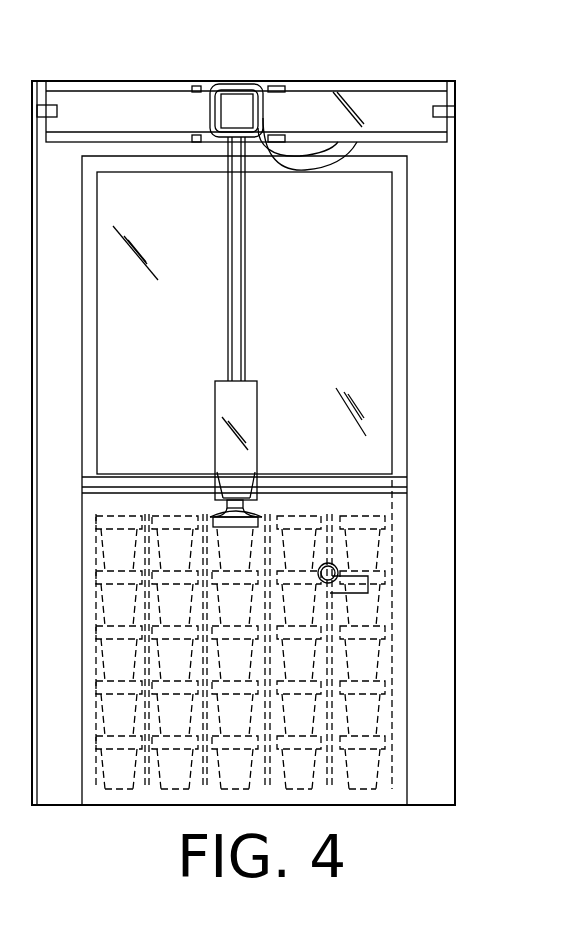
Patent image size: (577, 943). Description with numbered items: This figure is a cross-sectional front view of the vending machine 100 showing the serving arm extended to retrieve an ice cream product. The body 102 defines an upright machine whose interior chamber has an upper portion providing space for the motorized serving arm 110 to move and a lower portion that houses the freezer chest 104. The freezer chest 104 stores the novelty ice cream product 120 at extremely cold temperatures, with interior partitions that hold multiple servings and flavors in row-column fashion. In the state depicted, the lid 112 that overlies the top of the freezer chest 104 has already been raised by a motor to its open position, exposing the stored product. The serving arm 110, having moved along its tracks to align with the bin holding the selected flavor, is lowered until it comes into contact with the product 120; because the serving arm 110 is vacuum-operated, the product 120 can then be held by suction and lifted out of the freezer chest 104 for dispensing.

The vending machine 100 is at (233, 78).
The body 102 is at (455, 184).
The freezer chest 104 is at (410, 543).
The serving arm 110 is at (215, 432).
The lid 112 is at (407, 317).
The product 120 is at (358, 517).